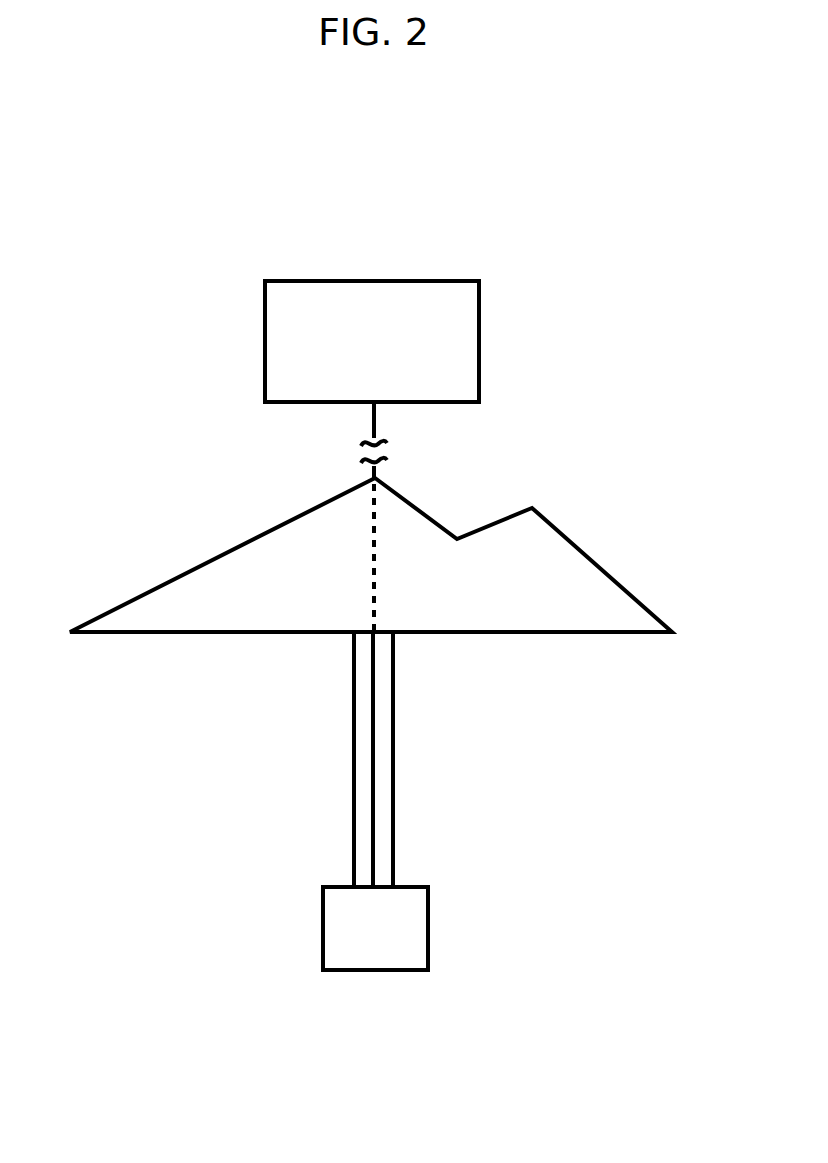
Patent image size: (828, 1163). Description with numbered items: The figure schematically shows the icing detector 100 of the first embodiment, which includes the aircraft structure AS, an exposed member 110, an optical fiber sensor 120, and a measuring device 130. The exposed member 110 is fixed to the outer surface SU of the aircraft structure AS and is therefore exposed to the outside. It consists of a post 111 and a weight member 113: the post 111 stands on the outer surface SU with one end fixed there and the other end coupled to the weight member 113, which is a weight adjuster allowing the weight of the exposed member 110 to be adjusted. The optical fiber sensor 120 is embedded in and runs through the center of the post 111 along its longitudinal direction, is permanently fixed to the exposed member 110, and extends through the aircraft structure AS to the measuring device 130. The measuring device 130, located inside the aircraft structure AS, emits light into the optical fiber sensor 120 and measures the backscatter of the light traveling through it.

The icing detector 100 is at (245, 216).
The measuring device 130 is at (481, 333).
The exposed member 110 is at (290, 735).
The post 111 is at (395, 798).
The optical fiber sensor 120 is at (375, 742).
The weight member 113 is at (430, 918).
The aircraft structure AS is at (238, 617).
The outer surface SU is at (546, 634).